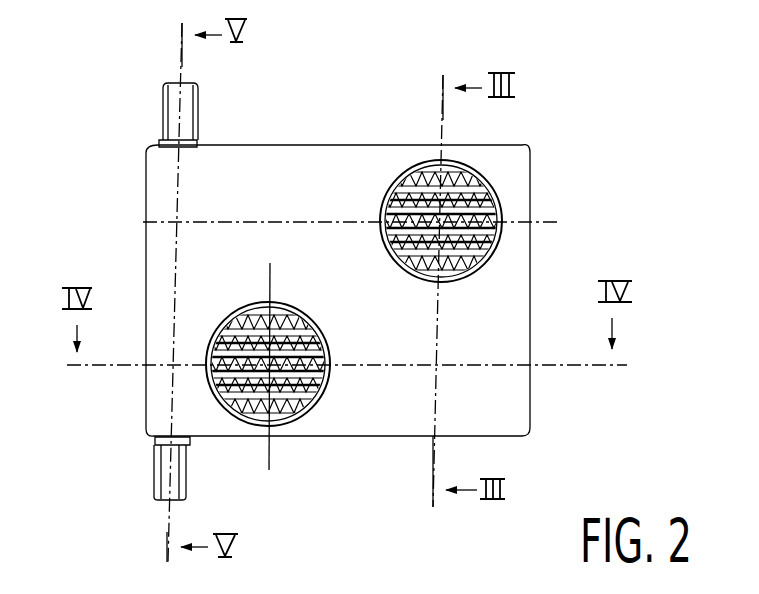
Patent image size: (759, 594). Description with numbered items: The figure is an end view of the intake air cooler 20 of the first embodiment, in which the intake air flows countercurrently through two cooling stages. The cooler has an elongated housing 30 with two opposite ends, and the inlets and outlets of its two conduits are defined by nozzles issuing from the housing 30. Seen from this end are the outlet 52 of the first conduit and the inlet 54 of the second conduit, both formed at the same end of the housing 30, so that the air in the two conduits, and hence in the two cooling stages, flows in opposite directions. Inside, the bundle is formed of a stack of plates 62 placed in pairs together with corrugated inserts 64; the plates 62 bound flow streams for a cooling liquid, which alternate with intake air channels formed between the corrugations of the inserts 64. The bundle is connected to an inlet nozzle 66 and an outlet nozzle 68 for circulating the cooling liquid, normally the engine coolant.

The cooler 20 is at (128, 424).
The housing 30 is at (148, 183).
The outlet 52 is at (306, 412).
The inlet 54 is at (453, 221).
The plates 62 is at (384, 229).
The corrugated inserts 64 is at (501, 243).
The inlet nozzle 66 is at (198, 107).
The outlet nozzle 68 is at (185, 470).